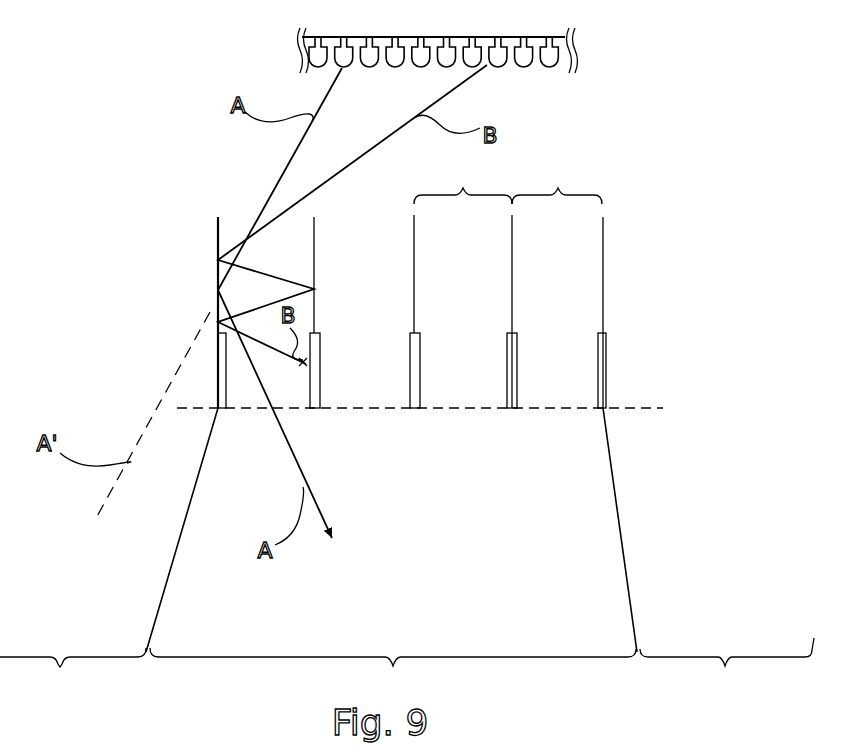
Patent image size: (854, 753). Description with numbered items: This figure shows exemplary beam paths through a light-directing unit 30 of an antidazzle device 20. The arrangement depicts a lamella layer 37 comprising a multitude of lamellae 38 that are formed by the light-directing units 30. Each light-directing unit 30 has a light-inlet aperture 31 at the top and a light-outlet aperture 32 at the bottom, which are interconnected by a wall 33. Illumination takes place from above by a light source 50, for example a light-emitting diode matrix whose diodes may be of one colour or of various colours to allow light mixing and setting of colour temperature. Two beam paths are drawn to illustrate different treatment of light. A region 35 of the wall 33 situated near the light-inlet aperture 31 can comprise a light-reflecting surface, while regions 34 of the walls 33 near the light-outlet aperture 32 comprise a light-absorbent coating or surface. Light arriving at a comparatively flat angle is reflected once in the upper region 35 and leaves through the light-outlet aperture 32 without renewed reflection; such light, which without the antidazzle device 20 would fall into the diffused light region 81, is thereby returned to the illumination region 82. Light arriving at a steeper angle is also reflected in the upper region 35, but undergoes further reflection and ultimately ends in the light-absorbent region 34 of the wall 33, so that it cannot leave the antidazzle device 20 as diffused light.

The light source / lamp array 50 is at (556, 73).
The region of the wall near the light-inlet aperture 35 is at (215, 225).
The region of the wall near the light-outlet aperture 34 is at (198, 375).
The wall 33 is at (512, 283).
The light-directing unit 30 is at (508, 182).
The light-inlet aperture 31 is at (588, 232).
The antidazzle device 20 is at (612, 268).
The lamella layer 37 is at (688, 278).
The lamellae 38 is at (603, 305).
The light-outlet aperture 32 is at (590, 416).
The diffused light region 81 is at (407, 666).
The illumination region 82 is at (393, 671).